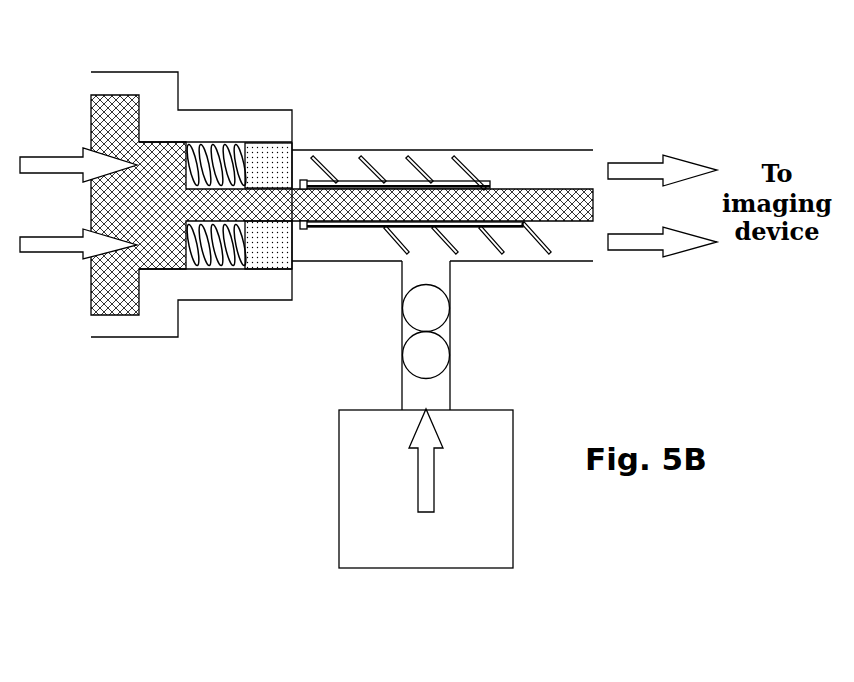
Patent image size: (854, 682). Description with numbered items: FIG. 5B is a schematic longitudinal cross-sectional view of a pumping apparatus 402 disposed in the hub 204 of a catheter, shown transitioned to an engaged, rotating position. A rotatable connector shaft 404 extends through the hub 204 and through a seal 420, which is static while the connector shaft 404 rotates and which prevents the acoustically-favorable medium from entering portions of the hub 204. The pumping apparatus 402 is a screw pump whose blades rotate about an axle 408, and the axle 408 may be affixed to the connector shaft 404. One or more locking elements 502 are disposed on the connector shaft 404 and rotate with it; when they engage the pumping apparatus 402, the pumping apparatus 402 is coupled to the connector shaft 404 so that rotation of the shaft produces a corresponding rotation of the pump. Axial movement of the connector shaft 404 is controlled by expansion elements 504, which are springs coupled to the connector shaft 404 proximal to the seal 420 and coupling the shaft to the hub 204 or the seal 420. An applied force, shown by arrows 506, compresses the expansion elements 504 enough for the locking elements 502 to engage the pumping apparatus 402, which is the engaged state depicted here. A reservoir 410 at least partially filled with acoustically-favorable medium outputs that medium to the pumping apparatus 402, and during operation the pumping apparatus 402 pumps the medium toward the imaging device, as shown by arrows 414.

The hub 204 is at (392, 82).
The pumping apparatus 402 is at (492, 166).
The connector shaft 404 is at (163, 140).
The axle 408 is at (448, 180).
The reservoir 410 is at (339, 481).
The arrows 414 is at (637, 162).
The seal 420 is at (270, 155).
The locking elements 502 is at (304, 180).
The expansion elements 504 is at (222, 150).
The arrows 506 is at (47, 155).